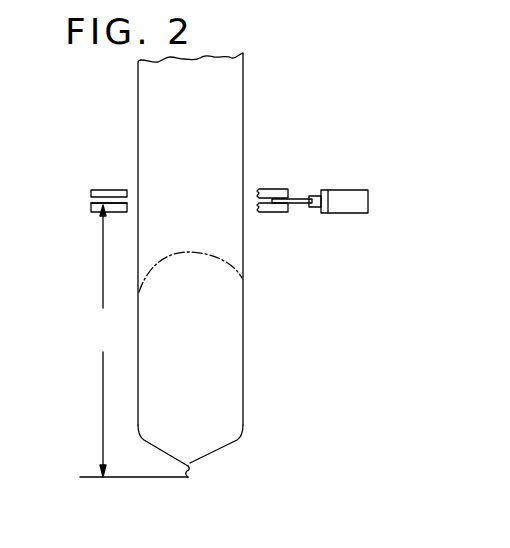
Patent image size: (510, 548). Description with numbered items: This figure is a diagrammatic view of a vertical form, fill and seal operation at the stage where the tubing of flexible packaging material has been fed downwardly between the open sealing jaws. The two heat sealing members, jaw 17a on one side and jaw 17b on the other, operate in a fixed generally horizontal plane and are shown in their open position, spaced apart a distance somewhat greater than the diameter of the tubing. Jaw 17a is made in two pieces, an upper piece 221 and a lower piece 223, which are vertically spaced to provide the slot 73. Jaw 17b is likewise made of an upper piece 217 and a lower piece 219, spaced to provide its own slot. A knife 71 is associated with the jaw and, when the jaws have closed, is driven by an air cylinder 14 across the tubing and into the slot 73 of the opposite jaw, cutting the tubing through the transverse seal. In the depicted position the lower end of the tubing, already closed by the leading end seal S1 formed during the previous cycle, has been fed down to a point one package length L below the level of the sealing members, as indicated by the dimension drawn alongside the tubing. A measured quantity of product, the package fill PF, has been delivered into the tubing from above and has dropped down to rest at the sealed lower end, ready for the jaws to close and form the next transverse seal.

The actuator cylinder 14 is at (357, 208).
The sealing jaw 17a is at (75, 209).
The sealing jaw 17b is at (300, 211).
The knife 71 is at (277, 212).
The slot 73 is at (92, 205).
The upper piece 217 is at (266, 190).
The lower piece 219 is at (265, 212).
The upper piece 221 is at (108, 190).
The lower piece 223 is at (92, 212).
The package fill PF is at (203, 215).
The package length L is at (99, 341).
The leading end seal S1 is at (190, 475).